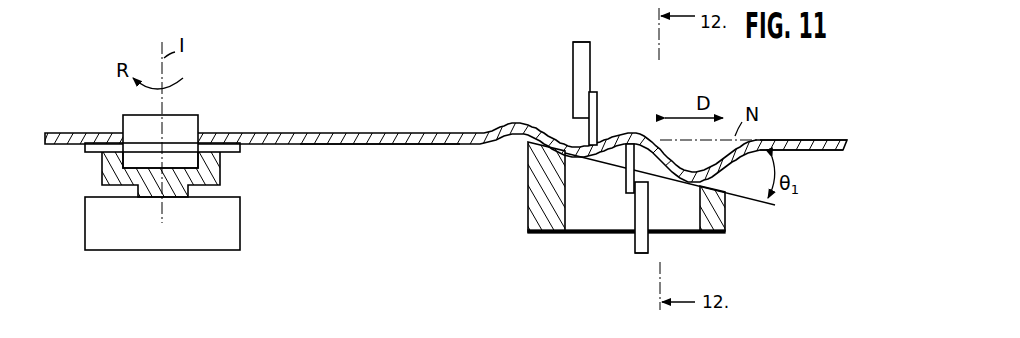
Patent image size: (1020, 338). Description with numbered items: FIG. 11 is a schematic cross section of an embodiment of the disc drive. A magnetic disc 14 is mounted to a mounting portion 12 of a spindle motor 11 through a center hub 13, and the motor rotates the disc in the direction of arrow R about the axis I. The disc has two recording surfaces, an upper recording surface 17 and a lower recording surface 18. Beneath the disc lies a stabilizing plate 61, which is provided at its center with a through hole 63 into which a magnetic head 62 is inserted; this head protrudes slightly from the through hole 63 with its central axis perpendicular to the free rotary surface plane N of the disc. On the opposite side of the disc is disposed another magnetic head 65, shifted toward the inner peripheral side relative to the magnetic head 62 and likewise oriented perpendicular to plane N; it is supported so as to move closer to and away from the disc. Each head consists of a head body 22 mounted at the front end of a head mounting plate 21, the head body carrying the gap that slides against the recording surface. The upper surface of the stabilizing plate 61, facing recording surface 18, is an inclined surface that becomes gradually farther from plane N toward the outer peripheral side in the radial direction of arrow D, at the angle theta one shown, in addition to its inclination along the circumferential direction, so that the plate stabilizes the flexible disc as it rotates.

The spindle motor 11 is at (230, 252).
The mounting portion 12 is at (212, 177).
The center hub 13 is at (188, 125).
The magnetic disc 14 is at (827, 138).
The recording surface 17 is at (358, 133).
The recording surface 18 is at (408, 147).
The head mounting plate 21 is at (578, 57).
The head body 22 is at (600, 112).
The stabilizing plate 61 is at (517, 211).
The magnetic head 62 is at (637, 258).
The through hole 63 is at (582, 218).
The magnetic head 65 is at (601, 48).